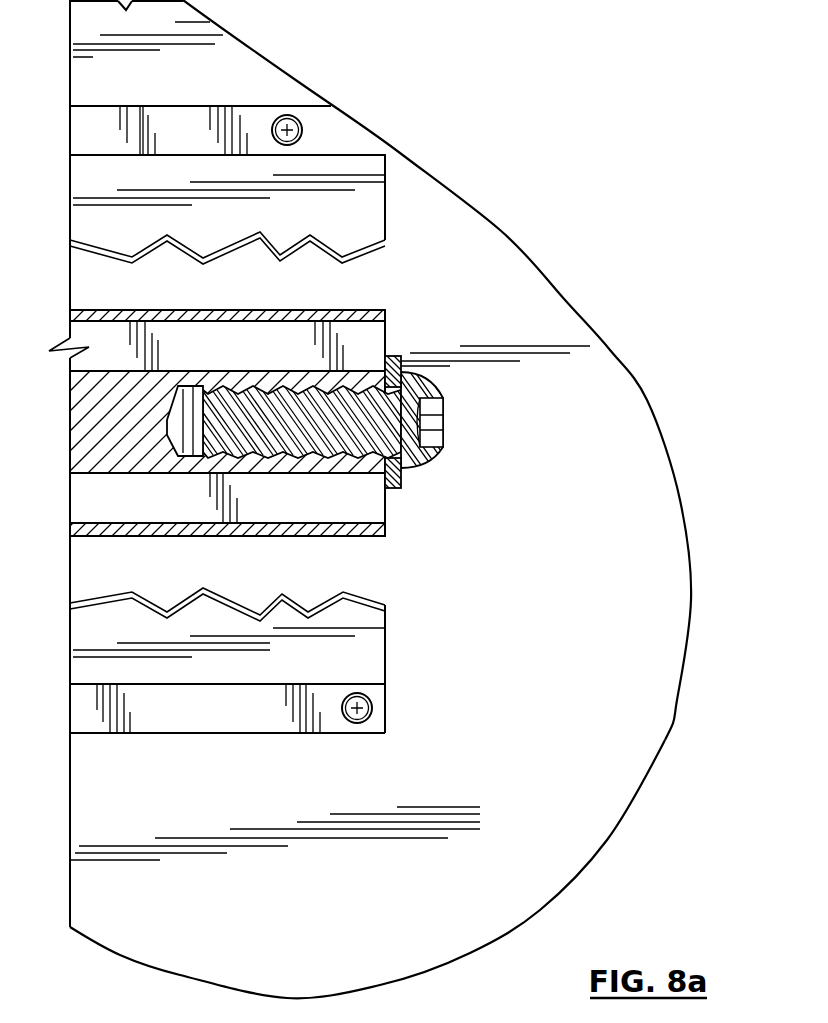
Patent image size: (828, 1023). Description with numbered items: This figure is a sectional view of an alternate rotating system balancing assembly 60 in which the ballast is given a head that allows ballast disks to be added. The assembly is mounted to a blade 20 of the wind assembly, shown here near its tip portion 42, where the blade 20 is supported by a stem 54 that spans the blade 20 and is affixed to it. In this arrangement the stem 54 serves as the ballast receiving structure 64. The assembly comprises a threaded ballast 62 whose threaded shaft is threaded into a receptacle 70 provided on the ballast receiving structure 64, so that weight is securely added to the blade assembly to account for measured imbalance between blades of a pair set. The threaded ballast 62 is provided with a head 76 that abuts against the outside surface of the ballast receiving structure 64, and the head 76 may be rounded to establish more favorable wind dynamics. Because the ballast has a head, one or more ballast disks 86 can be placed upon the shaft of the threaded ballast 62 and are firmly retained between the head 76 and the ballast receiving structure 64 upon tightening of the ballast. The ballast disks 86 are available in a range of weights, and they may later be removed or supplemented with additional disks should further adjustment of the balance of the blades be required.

The blade 20 is at (603, 364).
The tip portion 42 is at (582, 843).
The stem 54 is at (210, 378).
The rotating system balancing assembly 60 is at (309, 407).
The threaded ballast 62 is at (350, 398).
The ballast receiving structure 64 is at (392, 479).
The receptacle 70 is at (188, 430).
The head 76 is at (423, 452).
The ballast disks 86 is at (402, 362).